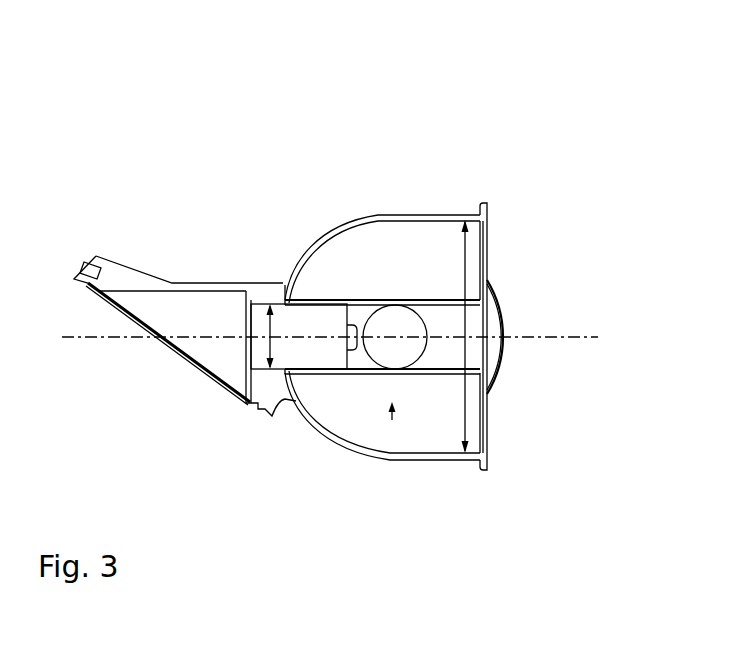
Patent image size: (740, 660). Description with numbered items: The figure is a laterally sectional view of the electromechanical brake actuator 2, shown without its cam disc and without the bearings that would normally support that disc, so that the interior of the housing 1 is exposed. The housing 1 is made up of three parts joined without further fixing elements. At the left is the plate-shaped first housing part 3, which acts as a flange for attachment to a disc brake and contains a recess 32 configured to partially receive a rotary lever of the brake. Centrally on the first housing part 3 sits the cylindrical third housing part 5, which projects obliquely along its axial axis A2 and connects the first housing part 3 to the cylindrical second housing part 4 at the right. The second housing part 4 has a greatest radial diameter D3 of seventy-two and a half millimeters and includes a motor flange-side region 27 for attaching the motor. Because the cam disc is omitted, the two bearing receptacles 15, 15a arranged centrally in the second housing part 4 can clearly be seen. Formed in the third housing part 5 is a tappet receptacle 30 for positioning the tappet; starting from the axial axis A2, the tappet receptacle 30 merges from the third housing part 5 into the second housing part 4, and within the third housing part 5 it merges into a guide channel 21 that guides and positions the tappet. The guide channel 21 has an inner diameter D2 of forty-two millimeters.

The housing 1 is at (364, 214).
The electromechanical brake actuator 2 is at (345, 72).
The first housing part 3 is at (100, 254).
The second housing part 4 is at (488, 204).
The third housing part 5 is at (282, 285).
The bearing receptacle 15 is at (428, 336).
The bearing receptacle 15a is at (495, 337).
The guide channel 21 is at (245, 295).
The motor flange-side region 27 is at (401, 426).
The tappet receptacle 30 is at (300, 373).
The recess 32 is at (189, 361).
The inner diameter of the guide channel D2 is at (253, 356).
The greatest radial diameter of the second housing part D3 is at (467, 258).
The axial axis of the third housing part A2 is at (348, 355).